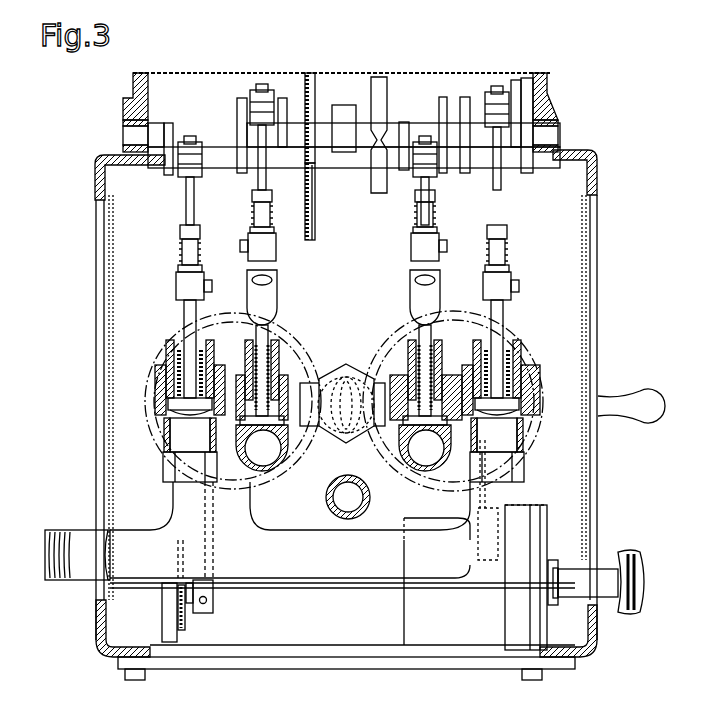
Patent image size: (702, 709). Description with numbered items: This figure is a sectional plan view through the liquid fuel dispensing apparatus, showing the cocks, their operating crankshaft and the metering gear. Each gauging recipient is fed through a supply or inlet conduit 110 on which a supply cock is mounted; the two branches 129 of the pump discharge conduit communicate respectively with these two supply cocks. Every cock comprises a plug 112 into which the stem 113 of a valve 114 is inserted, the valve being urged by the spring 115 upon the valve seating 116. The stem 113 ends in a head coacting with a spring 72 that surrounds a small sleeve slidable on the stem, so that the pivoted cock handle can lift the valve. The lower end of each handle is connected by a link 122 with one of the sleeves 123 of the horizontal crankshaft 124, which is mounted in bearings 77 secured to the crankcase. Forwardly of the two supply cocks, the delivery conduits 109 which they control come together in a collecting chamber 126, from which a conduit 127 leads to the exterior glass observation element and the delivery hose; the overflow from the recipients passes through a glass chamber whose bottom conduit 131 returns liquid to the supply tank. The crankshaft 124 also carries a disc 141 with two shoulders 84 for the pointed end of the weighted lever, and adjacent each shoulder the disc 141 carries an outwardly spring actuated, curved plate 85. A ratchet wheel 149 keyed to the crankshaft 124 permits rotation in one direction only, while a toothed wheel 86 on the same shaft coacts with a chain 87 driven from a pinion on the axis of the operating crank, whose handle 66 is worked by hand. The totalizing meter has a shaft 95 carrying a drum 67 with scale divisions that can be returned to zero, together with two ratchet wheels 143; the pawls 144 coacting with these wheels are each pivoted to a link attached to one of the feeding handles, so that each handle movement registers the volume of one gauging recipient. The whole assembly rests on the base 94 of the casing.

The handle 66 is at (612, 406).
The drum 67 is at (530, 650).
The spring 72 is at (182, 246).
The bearings 77 is at (343, 118).
The shoulders 84 is at (372, 184).
The spring actuated plate 85 is at (404, 133).
The toothed wheel 86 is at (310, 100).
The chain 87 is at (347, 184).
The base plate 94 is at (346, 683).
The shaft 95 is at (312, 586).
The delivery conduits 109 is at (165, 450).
The supply or inlet conduit 110 is at (343, 448).
The plug 112 is at (166, 366).
The stem 113 is at (190, 300).
The valve 114 is at (168, 405).
The spring 115 is at (176, 384).
The valve seating 116 is at (188, 434).
The link 122 is at (188, 202).
The sleeves 123 is at (225, 155).
The crankshaft 124 is at (443, 135).
The collecting chamber 126 is at (289, 552).
The conduit 127 is at (132, 542).
The branches 129 is at (360, 349).
The conduit 131 is at (400, 517).
The disc 141 is at (378, 90).
The ratchet wheels 143 is at (210, 614).
The pawls 144 is at (205, 612).
The ratchet wheel 149 is at (556, 145).